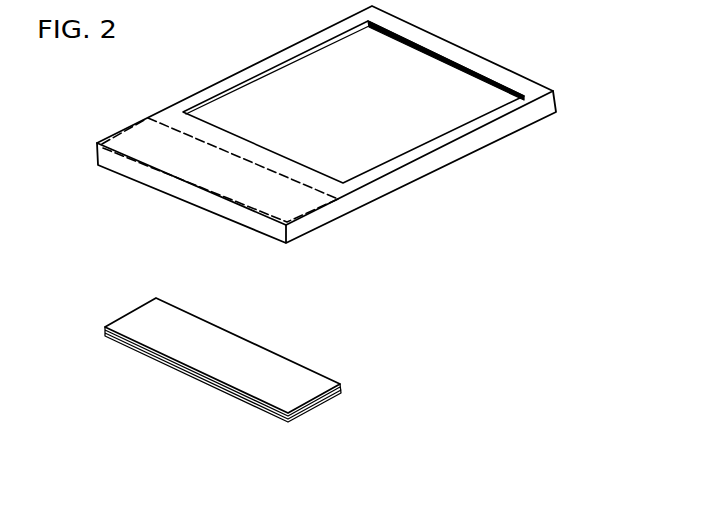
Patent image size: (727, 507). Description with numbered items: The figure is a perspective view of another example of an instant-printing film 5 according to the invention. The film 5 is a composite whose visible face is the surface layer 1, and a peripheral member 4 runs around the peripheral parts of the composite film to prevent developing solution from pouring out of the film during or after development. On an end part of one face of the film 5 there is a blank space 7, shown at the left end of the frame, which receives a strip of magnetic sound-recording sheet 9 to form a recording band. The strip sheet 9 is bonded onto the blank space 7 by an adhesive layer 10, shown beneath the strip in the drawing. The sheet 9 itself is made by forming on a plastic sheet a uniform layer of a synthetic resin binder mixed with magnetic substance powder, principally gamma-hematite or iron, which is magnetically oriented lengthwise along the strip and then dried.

The surface layer 1 is at (427, 120).
The peripheral member 4 is at (552, 93).
The instant-printing film 5 is at (483, 45).
The blank space 7 is at (340, 190).
The magnetic sound-recording sheet 9 is at (315, 375).
The adhesive layer 10 is at (280, 415).